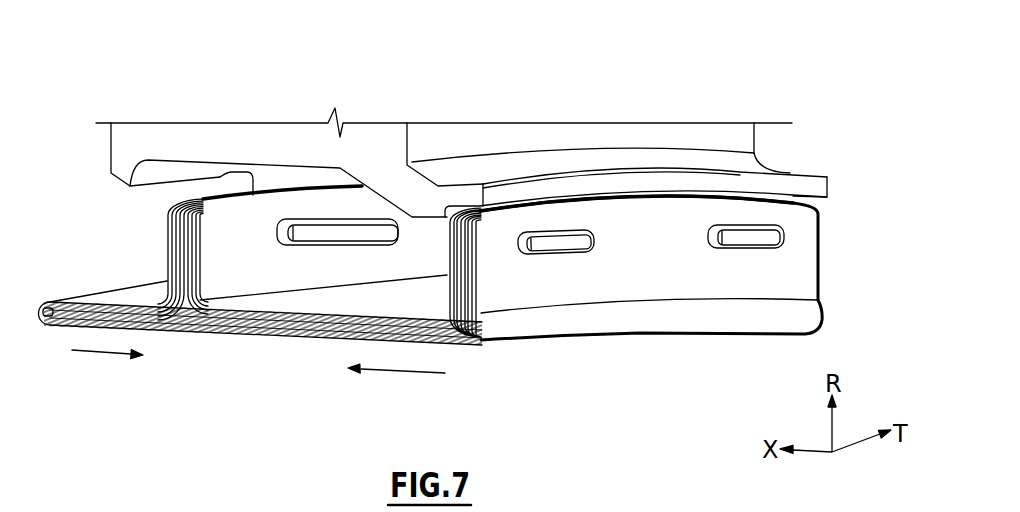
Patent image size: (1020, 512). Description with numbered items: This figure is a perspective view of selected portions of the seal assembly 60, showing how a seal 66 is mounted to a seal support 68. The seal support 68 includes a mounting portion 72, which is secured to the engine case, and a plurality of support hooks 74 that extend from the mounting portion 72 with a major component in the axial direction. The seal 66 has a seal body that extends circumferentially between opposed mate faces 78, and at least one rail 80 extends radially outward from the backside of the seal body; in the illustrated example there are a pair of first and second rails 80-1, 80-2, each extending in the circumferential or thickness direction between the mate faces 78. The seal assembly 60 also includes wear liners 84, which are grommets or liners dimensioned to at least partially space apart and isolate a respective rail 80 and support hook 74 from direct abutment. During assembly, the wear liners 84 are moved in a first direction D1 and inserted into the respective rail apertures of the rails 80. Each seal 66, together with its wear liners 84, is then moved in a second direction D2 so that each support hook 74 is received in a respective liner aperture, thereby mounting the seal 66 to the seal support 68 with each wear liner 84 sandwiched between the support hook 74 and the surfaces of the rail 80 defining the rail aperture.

The seal assembly 60 is at (444, 121).
The seal support 68 is at (511, 110).
The mounting portion 72 is at (563, 137).
The rail 80 is at (493, 256).
The first rail 80-1 is at (820, 233).
The second rail 80-2 is at (173, 247).
The support hook 74 is at (333, 236).
The wear liner 84 is at (293, 249).
The mate face 78 is at (210, 332).
The seal 66 is at (58, 333).
The first direction D1 is at (103, 353).
The second direction D2 is at (405, 371).